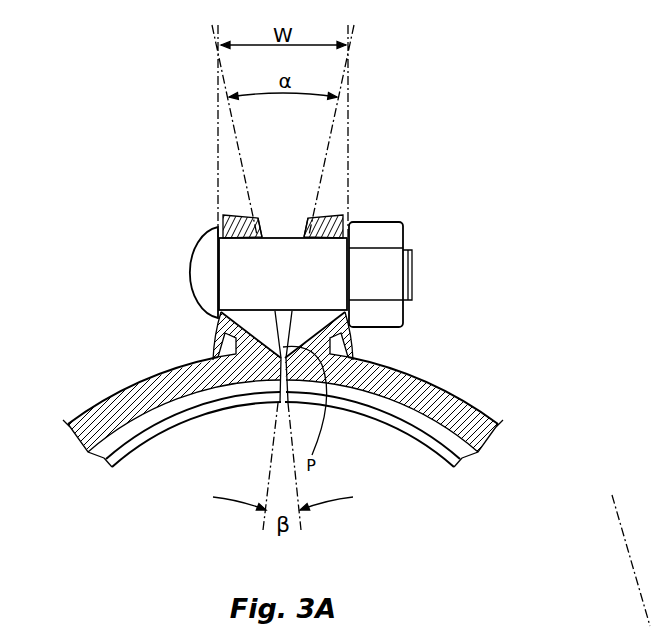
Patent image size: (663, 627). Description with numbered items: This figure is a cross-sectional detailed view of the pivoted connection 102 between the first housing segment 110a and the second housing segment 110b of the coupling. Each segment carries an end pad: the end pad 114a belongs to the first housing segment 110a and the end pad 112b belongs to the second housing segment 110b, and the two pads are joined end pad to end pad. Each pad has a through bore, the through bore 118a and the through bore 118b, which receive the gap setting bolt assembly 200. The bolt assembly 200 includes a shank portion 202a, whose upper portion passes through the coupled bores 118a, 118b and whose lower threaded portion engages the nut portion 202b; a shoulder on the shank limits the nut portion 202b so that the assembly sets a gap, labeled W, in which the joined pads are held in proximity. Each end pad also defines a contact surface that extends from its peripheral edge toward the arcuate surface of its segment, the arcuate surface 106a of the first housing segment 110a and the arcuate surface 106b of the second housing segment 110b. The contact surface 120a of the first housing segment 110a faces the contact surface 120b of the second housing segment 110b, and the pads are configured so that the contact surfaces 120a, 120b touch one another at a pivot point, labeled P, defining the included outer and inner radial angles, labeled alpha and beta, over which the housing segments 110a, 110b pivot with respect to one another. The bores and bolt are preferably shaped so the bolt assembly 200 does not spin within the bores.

The pivoted connection 102 is at (662, 533).
The arcuate surface 106a is at (133, 448).
The arcuate surface 106b is at (436, 447).
The first housing segment 110a is at (97, 415).
The second housing segment 110b is at (465, 412).
The end pad 112b is at (328, 215).
The end pad 114a is at (242, 216).
The through bore 118a is at (162, 238).
The through bore 118b is at (445, 233).
The contact surface 120a is at (265, 213).
The contact surface 120b is at (302, 213).
The gap setting bolt assembly 200 is at (186, 274).
The shank portion 202a is at (196, 300).
The nut portion 202b is at (405, 322).